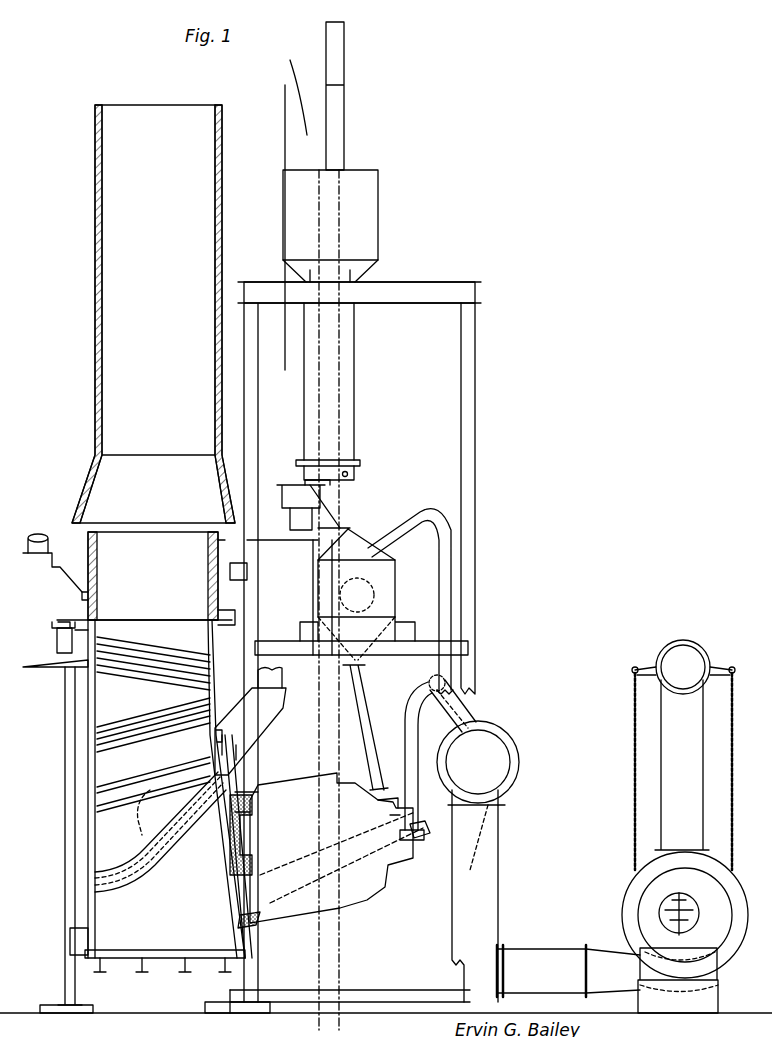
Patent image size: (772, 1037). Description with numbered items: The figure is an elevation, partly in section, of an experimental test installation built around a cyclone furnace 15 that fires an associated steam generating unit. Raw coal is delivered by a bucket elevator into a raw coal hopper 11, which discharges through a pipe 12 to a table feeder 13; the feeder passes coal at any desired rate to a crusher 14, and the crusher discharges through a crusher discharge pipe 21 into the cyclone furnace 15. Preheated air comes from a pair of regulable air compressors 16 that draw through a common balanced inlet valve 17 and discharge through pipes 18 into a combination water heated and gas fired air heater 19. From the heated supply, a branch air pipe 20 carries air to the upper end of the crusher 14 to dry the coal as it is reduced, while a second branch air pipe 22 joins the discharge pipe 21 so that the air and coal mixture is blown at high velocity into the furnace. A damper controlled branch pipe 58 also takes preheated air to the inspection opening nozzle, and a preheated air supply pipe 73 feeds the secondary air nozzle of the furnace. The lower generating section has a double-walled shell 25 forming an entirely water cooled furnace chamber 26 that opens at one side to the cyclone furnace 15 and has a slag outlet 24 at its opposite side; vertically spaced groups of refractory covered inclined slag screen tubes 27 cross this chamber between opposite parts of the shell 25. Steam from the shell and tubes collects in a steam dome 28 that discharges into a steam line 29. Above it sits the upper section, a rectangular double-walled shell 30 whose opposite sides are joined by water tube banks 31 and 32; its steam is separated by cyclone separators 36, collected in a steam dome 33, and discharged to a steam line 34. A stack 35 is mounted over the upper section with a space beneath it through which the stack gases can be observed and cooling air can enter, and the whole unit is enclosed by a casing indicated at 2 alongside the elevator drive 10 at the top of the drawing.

The stack casing 2 is at (278, 105).
The piston rod 10 is at (346, 108).
The raw coal hopper 11 is at (380, 212).
The pipe 12 is at (356, 392).
The table feeder 13 is at (310, 495).
The crusher 14 is at (388, 577).
The cyclone furnace 15 is at (352, 903).
The regulable air compressors 16 is at (731, 892).
The balanced inlet valve 17 is at (702, 652).
The pipes 18 is at (540, 949).
The air heater 19 is at (498, 880).
The branch air pipe 20 is at (453, 592).
The crusher discharge pipe 21 is at (368, 725).
The second branch air pipe 22 is at (405, 690).
The slag outlet 24 is at (70, 943).
The double-walled shell 25 is at (158, 950).
The furnace chamber 26 is at (165, 880).
The inclined slag screen tubes 27 is at (145, 790).
The steam dome 28 is at (256, 726).
The steam line 29 is at (282, 678).
The rectangular double-walled shell 30 is at (97, 702).
The water tube bank 31 is at (170, 728).
The water tube bank 32 is at (156, 658).
The steam dome 33 is at (50, 609).
The steam line 34 is at (45, 545).
The stack 35 is at (96, 340).
The cyclone separators 36 is at (57, 638).
The damper controlled branch pipe 58 is at (428, 762).
The preheated air supply pipe 73 is at (408, 890).